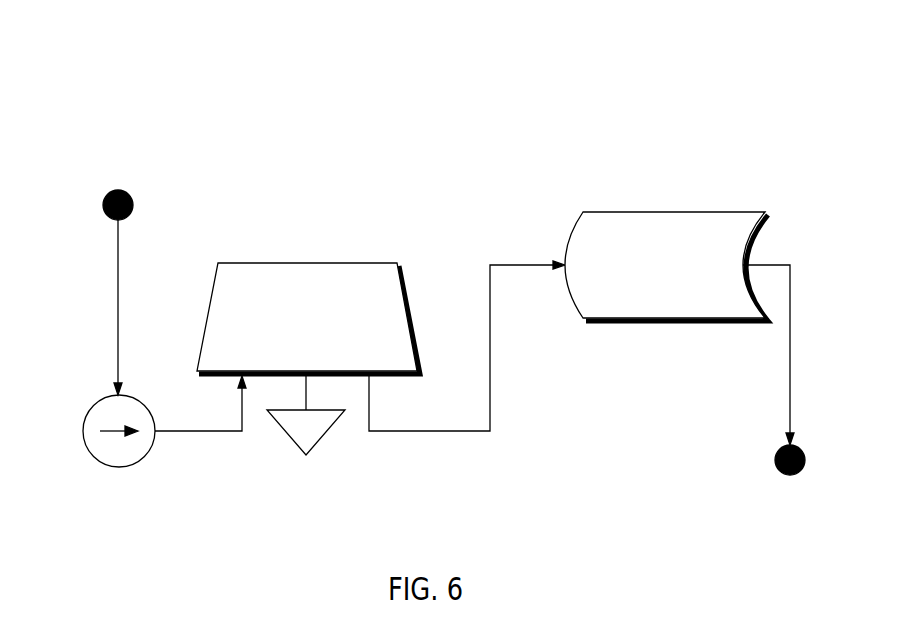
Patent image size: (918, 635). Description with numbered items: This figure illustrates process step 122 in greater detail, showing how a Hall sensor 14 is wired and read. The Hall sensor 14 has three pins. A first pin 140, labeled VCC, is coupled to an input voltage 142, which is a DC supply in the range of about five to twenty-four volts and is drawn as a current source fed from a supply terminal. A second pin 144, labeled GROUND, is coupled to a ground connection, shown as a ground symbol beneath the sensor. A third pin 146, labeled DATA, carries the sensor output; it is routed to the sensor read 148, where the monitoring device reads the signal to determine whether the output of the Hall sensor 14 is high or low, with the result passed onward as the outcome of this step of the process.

The process step 122 is at (698, 58).
The Hall sensor 14 is at (337, 215).
The input voltage 142 is at (90, 412).
The first pin 140 is at (197, 433).
The second pin 144 is at (298, 445).
The third pin 146 is at (369, 418).
The sensor read 148 is at (715, 212).